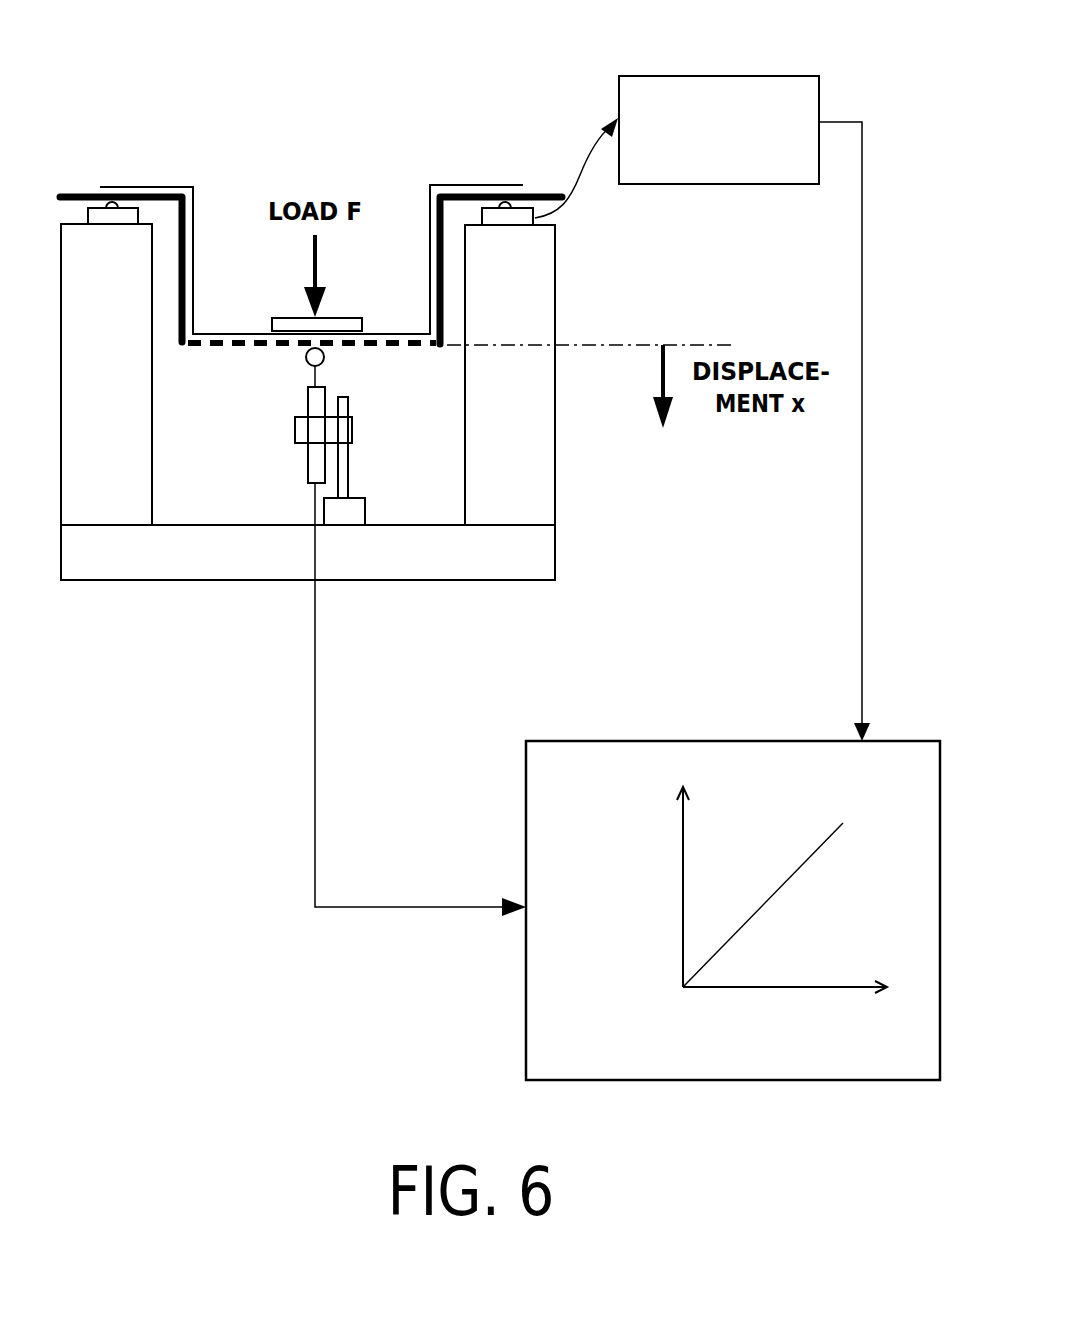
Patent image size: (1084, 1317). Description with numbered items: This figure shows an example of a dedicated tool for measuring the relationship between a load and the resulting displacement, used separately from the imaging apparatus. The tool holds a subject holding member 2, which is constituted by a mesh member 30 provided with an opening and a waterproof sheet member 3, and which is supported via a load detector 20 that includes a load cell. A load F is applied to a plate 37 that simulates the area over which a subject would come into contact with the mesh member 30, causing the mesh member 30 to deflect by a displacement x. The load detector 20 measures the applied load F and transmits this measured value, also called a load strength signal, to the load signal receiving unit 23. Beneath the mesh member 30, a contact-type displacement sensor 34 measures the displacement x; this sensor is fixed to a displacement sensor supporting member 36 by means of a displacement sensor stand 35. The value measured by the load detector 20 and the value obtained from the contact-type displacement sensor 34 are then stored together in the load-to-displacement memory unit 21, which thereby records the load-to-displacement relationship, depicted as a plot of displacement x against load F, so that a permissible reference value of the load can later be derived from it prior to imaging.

The subject holding member 2 is at (80, 192).
The waterproof sheet member 3 is at (450, 185).
The mesh member 30 is at (413, 342).
The plate 37 is at (277, 320).
The load detector 20 is at (500, 218).
The load signal receiving unit 23 is at (630, 88).
The contact-type displacement sensor 34 is at (317, 400).
The displacement sensor stand 35 is at (360, 505).
The displacement sensor supporting member 36 is at (538, 508).
The load-to-displacement memory unit 21 is at (543, 775).